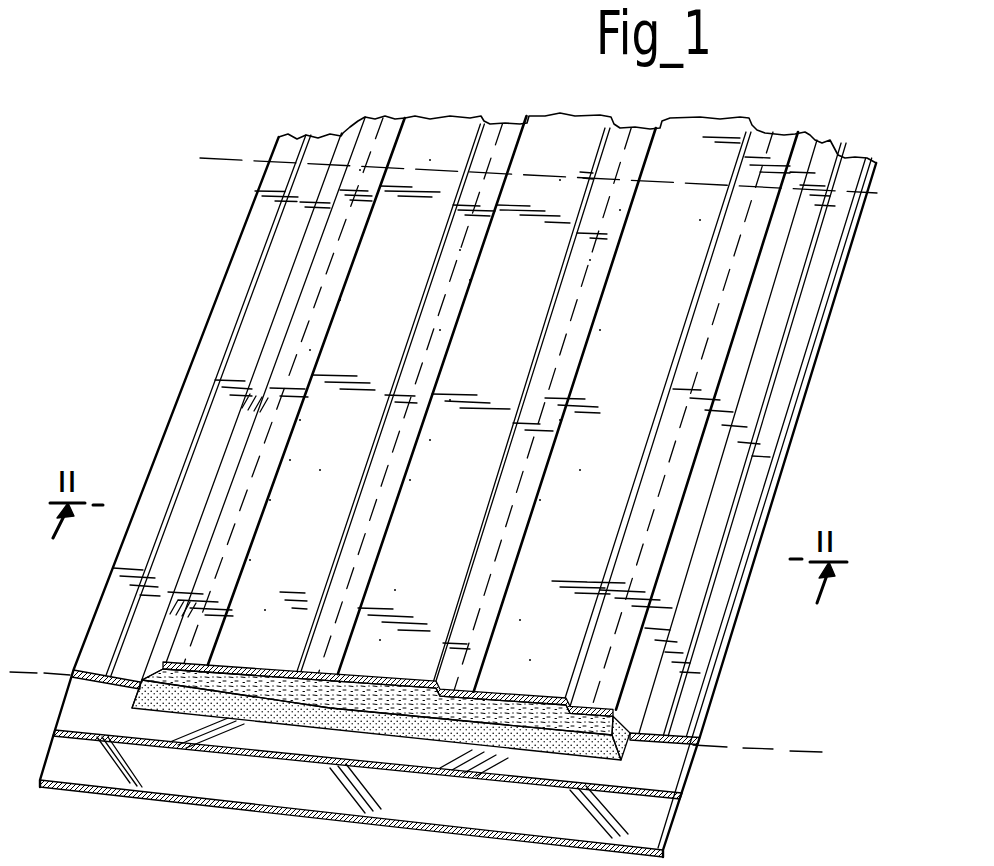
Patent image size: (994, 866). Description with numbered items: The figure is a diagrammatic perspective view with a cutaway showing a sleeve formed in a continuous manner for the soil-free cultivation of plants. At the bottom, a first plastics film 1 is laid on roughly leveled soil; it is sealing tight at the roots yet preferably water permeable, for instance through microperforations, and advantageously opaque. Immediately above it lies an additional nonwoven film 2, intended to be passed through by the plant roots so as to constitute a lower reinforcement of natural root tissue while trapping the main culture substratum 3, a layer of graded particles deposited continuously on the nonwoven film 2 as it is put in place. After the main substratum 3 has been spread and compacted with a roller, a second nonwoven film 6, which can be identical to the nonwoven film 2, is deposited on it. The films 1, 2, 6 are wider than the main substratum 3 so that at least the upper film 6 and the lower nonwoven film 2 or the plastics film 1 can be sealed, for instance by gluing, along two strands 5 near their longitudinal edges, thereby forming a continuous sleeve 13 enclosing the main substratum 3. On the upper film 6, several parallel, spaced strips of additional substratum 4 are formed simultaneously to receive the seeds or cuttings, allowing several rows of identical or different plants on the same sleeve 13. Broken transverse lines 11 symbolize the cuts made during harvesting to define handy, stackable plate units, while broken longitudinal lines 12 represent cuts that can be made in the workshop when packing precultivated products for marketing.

The plastics film 1 is at (142, 782).
The nonwoven film 2 is at (148, 731).
The main culture substratum 3 is at (250, 711).
The additional substratum 4 is at (300, 550).
The strands 5 is at (205, 418).
The second nonwoven film 6 is at (642, 587).
The transverse lines 11 is at (213, 160).
The longitudinal lines 12 is at (340, 247).
The continuous sleeve 13 is at (188, 338).